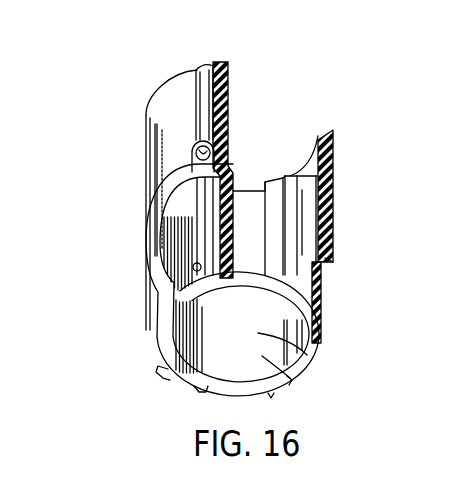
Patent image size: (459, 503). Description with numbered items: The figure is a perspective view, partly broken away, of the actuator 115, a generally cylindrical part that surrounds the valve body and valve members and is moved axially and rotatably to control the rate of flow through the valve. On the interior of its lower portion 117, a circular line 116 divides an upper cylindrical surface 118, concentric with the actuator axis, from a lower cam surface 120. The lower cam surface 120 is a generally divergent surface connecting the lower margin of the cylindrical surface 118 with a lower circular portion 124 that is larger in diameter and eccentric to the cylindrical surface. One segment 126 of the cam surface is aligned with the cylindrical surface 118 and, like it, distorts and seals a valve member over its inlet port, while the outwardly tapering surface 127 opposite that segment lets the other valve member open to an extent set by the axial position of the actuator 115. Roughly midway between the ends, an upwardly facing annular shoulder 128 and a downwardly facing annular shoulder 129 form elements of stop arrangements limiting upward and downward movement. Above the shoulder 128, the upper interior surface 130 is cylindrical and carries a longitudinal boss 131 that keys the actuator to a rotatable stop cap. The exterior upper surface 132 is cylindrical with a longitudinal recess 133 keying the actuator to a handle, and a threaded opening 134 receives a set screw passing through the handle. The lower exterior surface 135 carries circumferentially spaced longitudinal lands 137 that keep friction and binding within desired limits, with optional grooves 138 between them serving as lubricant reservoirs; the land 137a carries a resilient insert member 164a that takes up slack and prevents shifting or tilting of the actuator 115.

The actuator 115 is at (126, 131).
The exterior upper surface 132 is at (180, 98).
The longitudinal recess 133 is at (210, 64).
The threaded opening 134 is at (196, 157).
The longitudinally extending boss 131 is at (275, 184).
The upper interior surface 130 is at (303, 176).
The upwardly facing annular shoulder 128 is at (333, 214).
The downwardly facing annular shoulder 129 is at (328, 257).
The upper cylindrical surface 118 is at (281, 279).
The circular line 116 is at (281, 298).
The lower portion 117 is at (320, 328).
The lower cam surface 120 is at (313, 355).
The outwardly tapering surface 127 is at (293, 372).
The longitudinal land 137 is at (290, 384).
The lower circular portion 124 is at (197, 388).
The land 137a is at (193, 234).
The groove 138 is at (188, 248).
The insert member 164a is at (174, 263).
The lower exterior surface 135 is at (163, 281).
The segment of the cam surface 126 is at (180, 320).